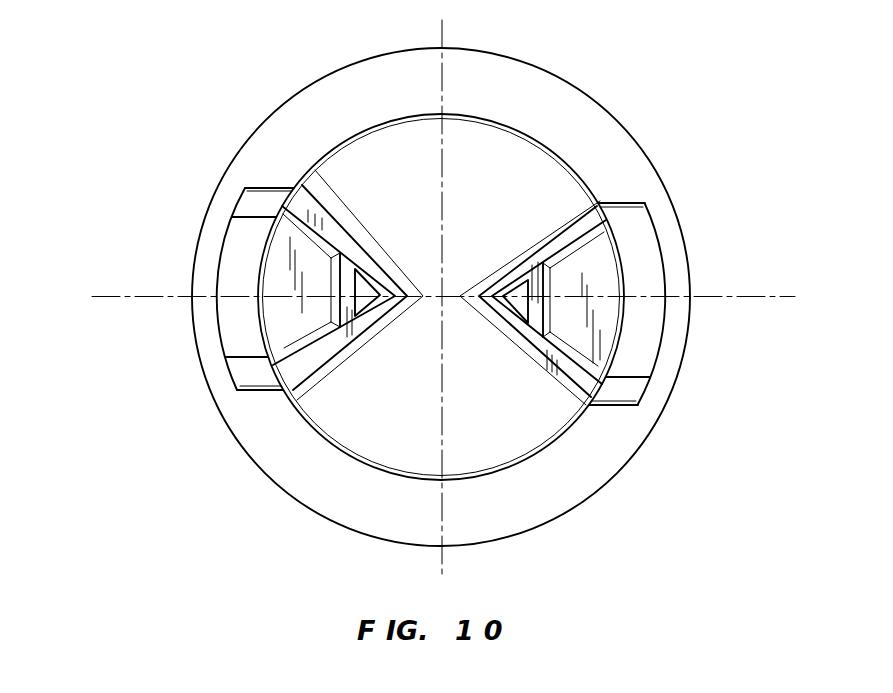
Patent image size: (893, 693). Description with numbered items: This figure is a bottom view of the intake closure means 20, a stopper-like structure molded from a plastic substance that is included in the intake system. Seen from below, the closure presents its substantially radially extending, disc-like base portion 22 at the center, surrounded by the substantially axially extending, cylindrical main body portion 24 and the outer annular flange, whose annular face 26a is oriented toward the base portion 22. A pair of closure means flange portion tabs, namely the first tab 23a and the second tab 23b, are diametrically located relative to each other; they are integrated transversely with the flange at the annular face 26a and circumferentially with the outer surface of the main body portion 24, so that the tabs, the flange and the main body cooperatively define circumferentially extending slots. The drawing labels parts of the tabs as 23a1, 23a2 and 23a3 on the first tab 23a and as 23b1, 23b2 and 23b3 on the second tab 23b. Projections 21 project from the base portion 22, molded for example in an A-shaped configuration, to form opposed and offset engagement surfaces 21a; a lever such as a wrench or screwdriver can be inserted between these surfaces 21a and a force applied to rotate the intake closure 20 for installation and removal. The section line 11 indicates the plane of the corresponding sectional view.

The intake closure means 20 is at (678, 97).
The projections 21 is at (340, 307).
The engagement surfaces 21a is at (373, 250).
The disc-like base portion 22 is at (505, 155).
The closure means flange portion first tab 23a is at (701, 350).
The lower tab of right support block 23a1 is at (618, 393).
The inner face of right support block 23a2 is at (650, 333).
The upper tab of right support block 23a3 is at (638, 234).
The closure means flange portion second tab 23b is at (184, 315).
The upper tab of left support block 23b1 is at (258, 190).
The inner face of left support block 23b2 is at (230, 280).
The lower tab of left support block 23b3 is at (206, 427).
The cylindrical main body portion 24 is at (373, 470).
The annular face 26a is at (527, 507).
The section line 11- 11 is at (109, 283).